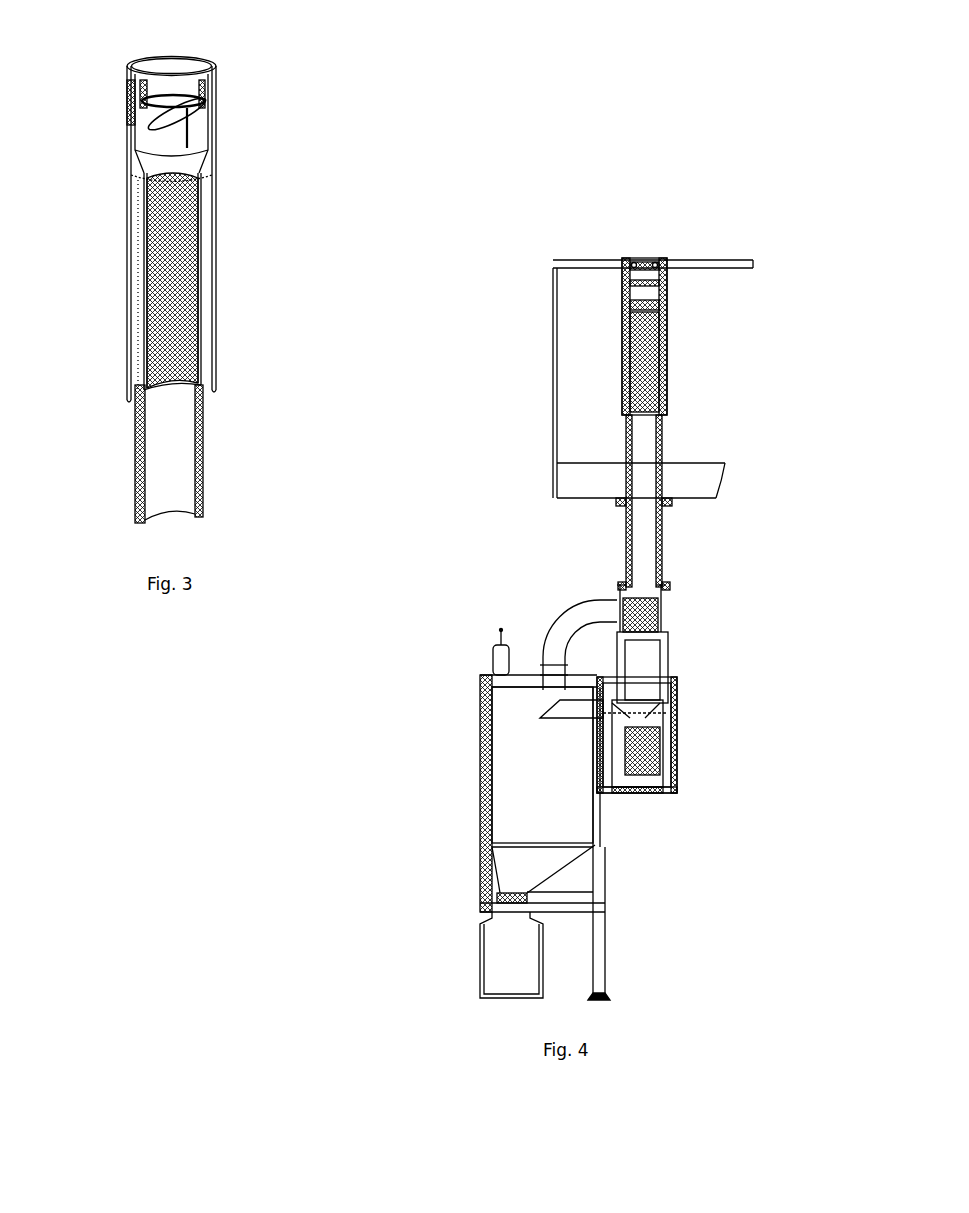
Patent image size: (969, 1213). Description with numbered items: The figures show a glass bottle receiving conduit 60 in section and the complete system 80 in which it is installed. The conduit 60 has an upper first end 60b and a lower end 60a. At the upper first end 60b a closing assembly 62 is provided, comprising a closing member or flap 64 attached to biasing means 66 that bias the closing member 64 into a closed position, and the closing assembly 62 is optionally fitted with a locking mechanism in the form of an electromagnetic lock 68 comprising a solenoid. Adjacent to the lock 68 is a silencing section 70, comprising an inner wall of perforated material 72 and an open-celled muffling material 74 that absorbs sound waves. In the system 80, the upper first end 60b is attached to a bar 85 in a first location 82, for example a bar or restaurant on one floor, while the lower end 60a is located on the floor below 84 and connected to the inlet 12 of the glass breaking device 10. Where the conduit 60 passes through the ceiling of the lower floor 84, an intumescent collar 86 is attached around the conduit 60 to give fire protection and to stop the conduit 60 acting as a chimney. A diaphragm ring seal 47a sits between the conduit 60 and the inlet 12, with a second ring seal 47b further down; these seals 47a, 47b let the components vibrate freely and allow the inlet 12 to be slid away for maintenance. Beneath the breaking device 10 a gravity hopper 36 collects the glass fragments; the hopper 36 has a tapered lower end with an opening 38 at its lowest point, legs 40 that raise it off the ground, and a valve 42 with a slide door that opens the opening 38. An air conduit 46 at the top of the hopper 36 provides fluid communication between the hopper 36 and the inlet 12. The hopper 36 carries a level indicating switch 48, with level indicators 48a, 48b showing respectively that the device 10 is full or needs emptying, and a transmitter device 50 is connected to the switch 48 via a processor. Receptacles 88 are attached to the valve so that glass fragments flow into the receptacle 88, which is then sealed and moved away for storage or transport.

In FIG. 4, the glass breaking device 10 is at (660, 790).
In FIG. 4, the inlet 12 is at (660, 615).
In FIG. 4, the gravity hopper 36 is at (481, 762).
In FIG. 4, the opening 38 is at (500, 890).
In FIG. 4, the legs 40 is at (601, 970).
In FIG. 4, the valve 42 is at (506, 903).
In FIG. 4, the air conduit 46 is at (566, 620).
In FIG. 4, the diaphragm ring seal 47a is at (670, 585).
In FIG. 4, the diaphragm ring seal 47b is at (668, 713).
In FIG. 4, the level indicating switch 48 is at (483, 730).
In FIG. 4, the level indicator 48a is at (657, 793).
In FIG. 4, the level indicator 48b is at (632, 793).
In FIG. 4, the transmitter device 50 is at (491, 660).
In FIG. 3, the glass bottle receiving conduit 60 is at (268, 189).
In FIG. 4, the glass bottle receiving conduit 60 is at (630, 378).
In FIG. 4, the lower end 60a is at (624, 572).
In FIG. 3, the upper first end 60b is at (216, 148).
In FIG. 4, the upper first end 60b is at (662, 318).
In FIG. 3, the closing assembly 62 is at (127, 128).
In FIG. 3, the closing member 64 is at (187, 110).
In FIG. 3, the biasing means 66 is at (150, 127).
In FIG. 3, the electromagnetic lock 68 is at (127, 107).
In FIG. 3, the silencing section 70 is at (200, 322).
In FIG. 3, the inner wall of perforated material 72 is at (186, 270).
In FIG. 3, the open-celled muffling material 74 is at (140, 300).
In FIG. 4, the system 80 is at (680, 563).
In FIG. 4, the first location 82 is at (580, 349).
In FIG. 4, the floor below 84 is at (659, 435).
In FIG. 4, the bar 85 is at (745, 268).
In FIG. 4, the intumescent collar 86 is at (622, 500).
In FIG. 4, the receptacle 88 is at (491, 983).